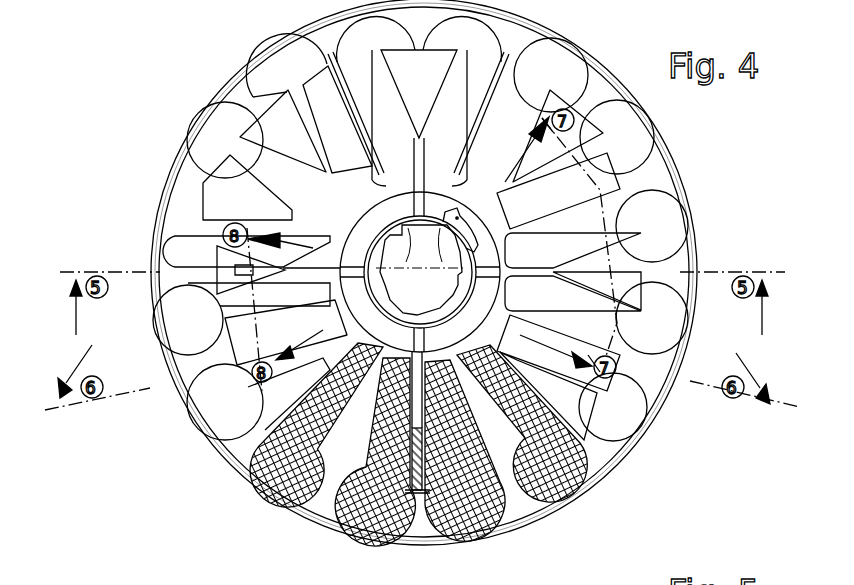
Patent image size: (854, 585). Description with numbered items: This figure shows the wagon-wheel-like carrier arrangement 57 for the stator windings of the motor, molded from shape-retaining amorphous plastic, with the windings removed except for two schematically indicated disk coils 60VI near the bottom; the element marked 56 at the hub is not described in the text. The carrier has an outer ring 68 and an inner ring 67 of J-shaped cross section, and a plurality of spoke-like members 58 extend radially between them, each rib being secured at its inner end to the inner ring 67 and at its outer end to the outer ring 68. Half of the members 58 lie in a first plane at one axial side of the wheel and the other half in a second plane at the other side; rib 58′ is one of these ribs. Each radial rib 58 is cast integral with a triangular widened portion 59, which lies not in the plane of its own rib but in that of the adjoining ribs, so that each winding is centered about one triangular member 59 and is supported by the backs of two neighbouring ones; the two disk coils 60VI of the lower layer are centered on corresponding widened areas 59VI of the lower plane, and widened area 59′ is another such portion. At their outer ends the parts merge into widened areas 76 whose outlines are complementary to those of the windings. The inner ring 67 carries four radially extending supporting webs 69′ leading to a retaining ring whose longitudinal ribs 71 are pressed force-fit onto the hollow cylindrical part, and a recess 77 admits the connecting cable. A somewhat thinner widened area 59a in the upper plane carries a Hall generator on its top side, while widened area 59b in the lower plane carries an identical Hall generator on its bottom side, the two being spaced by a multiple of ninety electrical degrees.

The rotor hub 56 is at (458, 292).
The carrier arrangement 57 is at (688, 524).
The spoke-like member 58 is at (330, 192).
The radial rib 58′ is at (500, 190).
The triangular widened portion 59 is at (266, 130).
The widened area 59a is at (128, 238).
The widened area 59b is at (240, 333).
The widened area 59′ is at (590, 128).
The widened area 59VI is at (570, 530).
The disk coil 60VI is at (512, 530).
The inner ring 67 is at (368, 188).
The outer ring 68 is at (416, 530).
The radially extending supporting web 69′ is at (340, 290).
The longitudinal rib 71 is at (378, 252).
The widened area 76 is at (624, 458).
The recess 77 is at (462, 210).